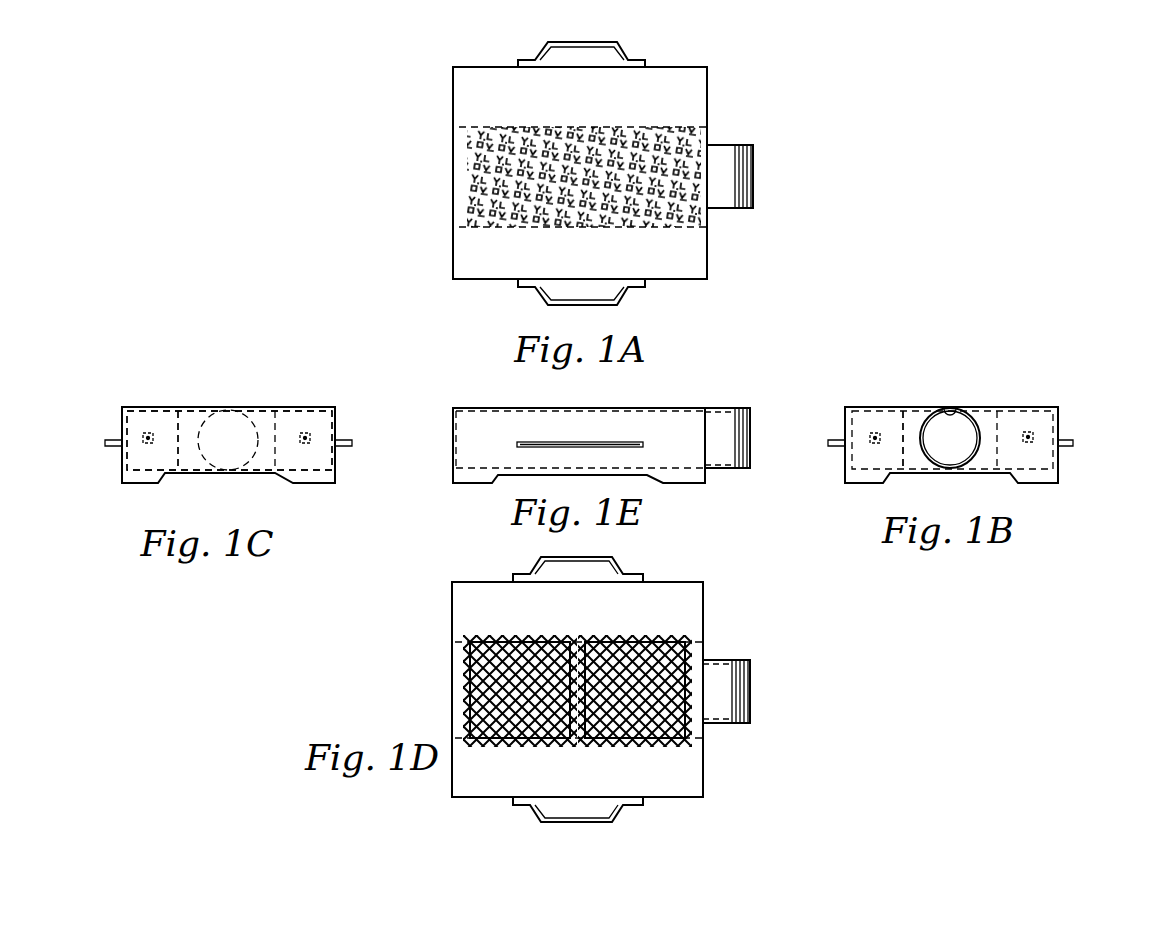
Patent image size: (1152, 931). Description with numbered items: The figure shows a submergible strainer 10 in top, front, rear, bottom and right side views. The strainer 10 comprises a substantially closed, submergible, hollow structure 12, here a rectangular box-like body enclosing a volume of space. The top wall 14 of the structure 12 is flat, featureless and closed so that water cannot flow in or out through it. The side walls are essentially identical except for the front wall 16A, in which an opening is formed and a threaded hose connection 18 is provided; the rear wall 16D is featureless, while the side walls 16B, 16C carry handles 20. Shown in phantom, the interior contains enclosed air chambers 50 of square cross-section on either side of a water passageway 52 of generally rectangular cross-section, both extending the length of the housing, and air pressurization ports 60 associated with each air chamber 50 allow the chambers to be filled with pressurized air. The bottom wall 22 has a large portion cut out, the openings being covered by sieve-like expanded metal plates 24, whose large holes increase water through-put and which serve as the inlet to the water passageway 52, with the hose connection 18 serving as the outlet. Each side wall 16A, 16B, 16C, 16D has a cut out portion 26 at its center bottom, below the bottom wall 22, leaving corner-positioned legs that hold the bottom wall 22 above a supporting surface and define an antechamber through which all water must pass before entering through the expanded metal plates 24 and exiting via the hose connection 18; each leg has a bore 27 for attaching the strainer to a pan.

In FIG. 1A, the submergible strainer 10 is at (828, 168).
In FIG. 1C, the submergible strainer 10 is at (256, 376).
In FIG. 1E, the submergible strainer 10 is at (746, 384).
In FIG. 1B, the submergible strainer 10 is at (1068, 378).
In FIG. 1D, the submergible strainer 10 is at (752, 610).
In FIG. 1A, the hollow structure 12 is at (707, 92).
In FIG. 1C, the hollow structure 12 is at (228, 445).
In FIG. 1E, the hollow structure 12 is at (500, 408).
In FIG. 1B, the hollow structure 12 is at (1060, 470).
In FIG. 1D, the hollow structure 12 is at (705, 612).
In FIG. 1A, the top wall 14 is at (580, 173).
In FIG. 1E, the top wall 14 is at (680, 408).
In FIG. 1B, the front wall 16A is at (950, 454).
In FIG. 1C, the side wall 16B is at (335, 430).
In FIG. 1C, the side wall 16C is at (122, 430).
In FIG. 1C, the rear wall 16D is at (229, 442).
In FIG. 1A, the threaded hose connection 18 is at (753, 180).
In FIG. 1C, the threaded hose connection 18 is at (228, 440).
In FIG. 1E, the threaded hose connection 18 is at (727, 438).
In FIG. 1B, the threaded hose connection 18 is at (951, 409).
In FIG. 1D, the threaded hose connection 18 is at (750, 690).
In FIG. 1A, the handles 20 is at (630, 52).
In FIG. 1D, the handles 20 is at (578, 689).
In FIG. 1D, the bottom wall 22 is at (651, 779).
In FIG. 1D, the expanded metal plates 24 is at (470, 695).
In FIG. 1C, the cut out portion 26 is at (275, 475).
In FIG. 1E, the cut out portion 26 is at (650, 477).
In FIG. 1B, the cut out portion 26 is at (1000, 475).
In FIG. 1E, the bore 27 is at (693, 478).
In FIG. 1A, the air chambers 50 is at (682, 93).
In FIG. 1C, the air chambers 50 is at (165, 423).
In FIG. 1B, the air chambers 50 is at (890, 420).
In FIG. 1D, the air chambers 50 is at (473, 600).
In FIG. 1A, the water passageway 52 is at (710, 133).
In FIG. 1C, the water passageway 52 is at (187, 408).
In FIG. 1B, the water passageway 52 is at (920, 425).
In FIG. 1D, the water passageway 52 is at (710, 730).
In FIG. 1C, the air pressurization ports 60 is at (148, 437).
In FIG. 1B, the air pressurization ports 60 is at (875, 432).